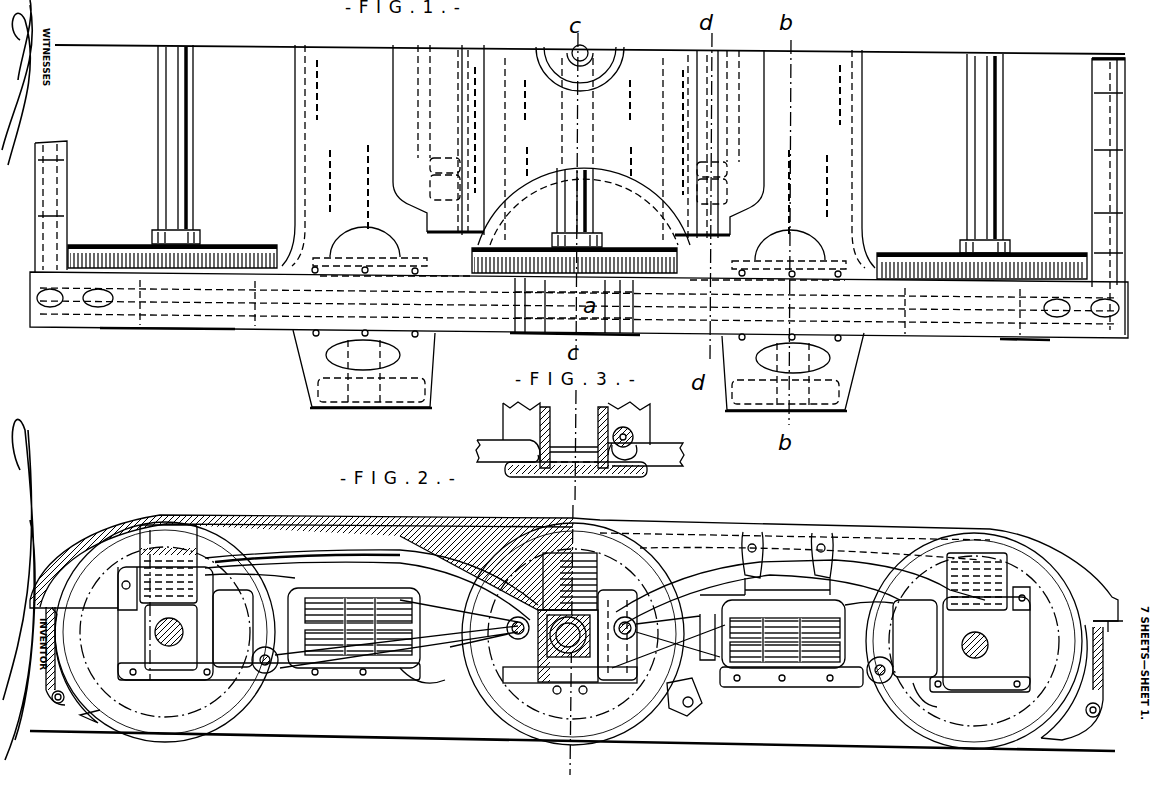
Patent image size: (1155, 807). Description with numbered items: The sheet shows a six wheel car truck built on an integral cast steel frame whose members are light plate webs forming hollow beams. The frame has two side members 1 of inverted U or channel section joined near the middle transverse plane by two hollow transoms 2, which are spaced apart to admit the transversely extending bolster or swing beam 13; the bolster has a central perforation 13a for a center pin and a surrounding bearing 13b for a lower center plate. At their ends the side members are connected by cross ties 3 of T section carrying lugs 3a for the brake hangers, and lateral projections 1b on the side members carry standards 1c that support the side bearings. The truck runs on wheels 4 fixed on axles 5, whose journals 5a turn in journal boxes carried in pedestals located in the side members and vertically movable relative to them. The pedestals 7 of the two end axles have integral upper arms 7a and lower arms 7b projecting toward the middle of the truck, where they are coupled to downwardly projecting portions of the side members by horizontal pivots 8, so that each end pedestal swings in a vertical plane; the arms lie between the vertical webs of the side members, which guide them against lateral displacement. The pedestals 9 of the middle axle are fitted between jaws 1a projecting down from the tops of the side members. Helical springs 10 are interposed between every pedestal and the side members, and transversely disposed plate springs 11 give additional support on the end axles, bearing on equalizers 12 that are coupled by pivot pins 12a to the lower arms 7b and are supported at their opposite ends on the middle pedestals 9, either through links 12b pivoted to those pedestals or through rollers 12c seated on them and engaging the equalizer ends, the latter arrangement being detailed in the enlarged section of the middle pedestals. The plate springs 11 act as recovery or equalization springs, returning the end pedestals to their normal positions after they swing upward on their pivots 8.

In FIG. 1, the side member 1 is at (245, 322).
In FIG. 2, the side member 1 is at (300, 518).
In FIG. 2, the jaws 1a is at (498, 610).
In FIG. 1, the lateral projections 1b is at (426, 384).
In FIG. 2, the standards 1c is at (760, 562).
In FIG. 1, the transom 2 is at (578, 157).
In FIG. 2, the transom 2 is at (310, 596).
In FIG. 1, the cross tie 3 is at (40, 193).
In FIG. 2, the cross tie 3 is at (92, 600).
In FIG. 2, the lugs 3a is at (114, 620).
In FIG. 1, the wheel 4 is at (212, 252).
In FIG. 2, the wheel 4 is at (292, 717).
In FIG. 1, the axle 5 is at (160, 151).
In FIG. 2, the journal 5a is at (577, 650).
In FIG. 2, the pedestal 7 is at (205, 624).
In FIG. 2, the upper arm 7a is at (372, 553).
In FIG. 2, the lower arm 7b is at (445, 681).
In FIG. 2, the horizontal pivot 8 is at (500, 629).
In FIG. 3, the pedestal of middle axle 9 is at (553, 426).
In FIG. 2, the pedestal of middle axle 9 is at (587, 656).
In FIG. 2, the helical spring 10 is at (1020, 566).
In FIG. 2, the plate spring 11 is at (372, 650).
In FIG. 3, the equalizer 12 is at (497, 455).
In FIG. 2, the equalizer 12 is at (515, 684).
In FIG. 2, the pivot pin 12a is at (300, 673).
In FIG. 3, the link 12b is at (640, 446).
In FIG. 3, the roller 12c is at (540, 470).
In FIG. 1, the bolster 13 is at (584, 149).
In FIG. 1, the central perforation 13a is at (588, 52).
In FIG. 1, the bearing 13b is at (552, 76).